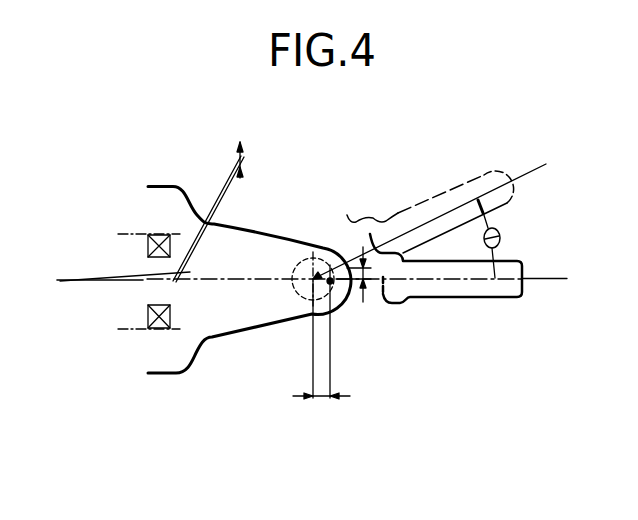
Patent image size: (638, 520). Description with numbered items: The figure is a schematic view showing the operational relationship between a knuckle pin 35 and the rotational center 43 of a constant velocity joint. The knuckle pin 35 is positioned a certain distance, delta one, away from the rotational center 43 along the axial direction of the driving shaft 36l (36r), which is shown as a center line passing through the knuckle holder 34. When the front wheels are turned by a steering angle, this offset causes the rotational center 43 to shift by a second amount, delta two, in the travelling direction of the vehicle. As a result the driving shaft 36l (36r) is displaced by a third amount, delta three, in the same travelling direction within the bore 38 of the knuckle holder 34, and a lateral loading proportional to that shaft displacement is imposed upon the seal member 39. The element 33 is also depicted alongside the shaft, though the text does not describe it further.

The rod 33 is at (458, 291).
The knuckle holder 34 is at (235, 322).
The knuckle pin 35 is at (309, 265).
The driving shaft 36l is at (65, 279).
The driving shaft 36r is at (125, 276).
The bore 38 is at (128, 236).
The seal member 39 is at (158, 329).
The rotational center 43 is at (332, 283).